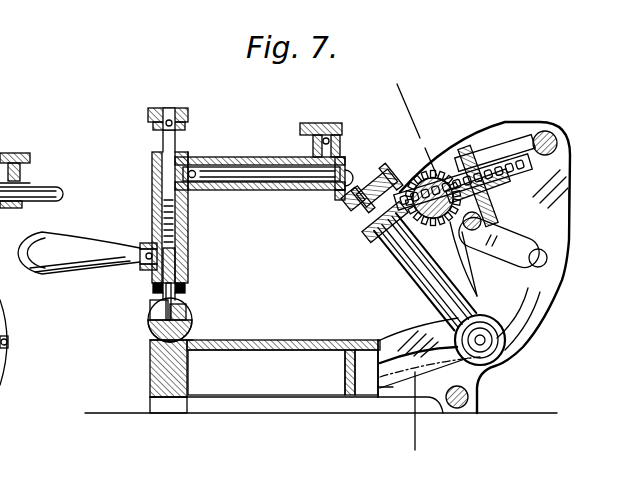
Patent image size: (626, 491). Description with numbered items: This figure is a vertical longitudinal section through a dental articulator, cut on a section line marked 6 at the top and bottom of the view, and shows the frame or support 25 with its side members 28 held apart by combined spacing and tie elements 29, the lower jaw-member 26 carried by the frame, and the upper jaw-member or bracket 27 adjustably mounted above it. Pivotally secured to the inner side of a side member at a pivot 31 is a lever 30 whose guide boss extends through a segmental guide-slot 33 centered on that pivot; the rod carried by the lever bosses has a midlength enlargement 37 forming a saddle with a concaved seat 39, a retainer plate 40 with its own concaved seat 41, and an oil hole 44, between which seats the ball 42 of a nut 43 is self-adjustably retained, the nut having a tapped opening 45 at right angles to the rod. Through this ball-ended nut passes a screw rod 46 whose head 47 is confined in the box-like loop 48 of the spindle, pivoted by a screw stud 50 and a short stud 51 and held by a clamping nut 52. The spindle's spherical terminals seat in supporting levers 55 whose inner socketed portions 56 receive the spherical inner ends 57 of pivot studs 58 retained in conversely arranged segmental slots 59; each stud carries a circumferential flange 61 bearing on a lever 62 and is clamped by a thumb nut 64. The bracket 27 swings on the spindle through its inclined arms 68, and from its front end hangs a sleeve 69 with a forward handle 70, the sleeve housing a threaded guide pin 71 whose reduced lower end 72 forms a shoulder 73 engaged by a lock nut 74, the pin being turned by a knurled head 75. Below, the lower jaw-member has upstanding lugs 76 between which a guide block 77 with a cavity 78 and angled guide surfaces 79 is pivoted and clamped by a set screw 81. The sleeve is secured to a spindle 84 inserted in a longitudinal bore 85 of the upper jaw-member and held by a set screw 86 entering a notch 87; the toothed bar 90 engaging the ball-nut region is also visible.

The section line 6 is at (413, 269).
The frame or support 25 is at (572, 237).
The lower jaw-member 26 is at (250, 330).
The upper jaw-member or bracket 27 is at (250, 192).
The side members 28 is at (567, 209).
The combined spacing and tie elements 29 is at (560, 144).
The lever 30 is at (525, 242).
The pivot 31 is at (548, 260).
The segmental guide-slots 33 is at (495, 150).
The enlargement 37 is at (403, 250).
The concaved seat 39 is at (447, 170).
The retainer plate 40 is at (455, 235).
The concaved interior portion or seat 41 is at (418, 270).
The spherical end or ball 42 is at (420, 177).
The nut 43 is at (493, 212).
The hole 44 is at (430, 170).
The tapped opening 45 is at (504, 245).
The screw rod 46 is at (527, 174).
The enlargement or head 47 is at (360, 228).
The box-like member or loop 48 is at (382, 237).
The screw stud 50 is at (349, 192).
The short stud 51 is at (378, 248).
The clamping nut 52 is at (352, 196).
The supporting levers 55 is at (440, 313).
The socketed portions 56 is at (513, 349).
The spherical inner ends 57 is at (493, 333).
The pivot studs 58 is at (13, 346).
The segmental slots 59 is at (407, 377).
The circumferential flange 61 is at (490, 366).
The lever 62 is at (550, 308).
The thumb nut 64 is at (7, 322).
The inclined arms 68 is at (350, 185).
The sleeve 69 is at (189, 231).
The handle 70 is at (70, 245).
The guide pin 71 is at (157, 289).
The reduced lower end 72 is at (186, 265).
The shoulder 73 is at (182, 258).
The lock nut 74 is at (187, 288).
The knurled head 75 is at (190, 116).
The lugs or ears 76 is at (153, 337).
The guide block 77 is at (153, 355).
The cavity 78 is at (160, 313).
The guide surfaces 79 is at (147, 308).
The set screw 81 is at (210, 350).
The spindle 84 is at (253, 170).
The longitudinal bore 85 is at (297, 185).
The set screw 86 is at (340, 177).
The notch 87 is at (322, 192).
The rack 90 is at (470, 148).